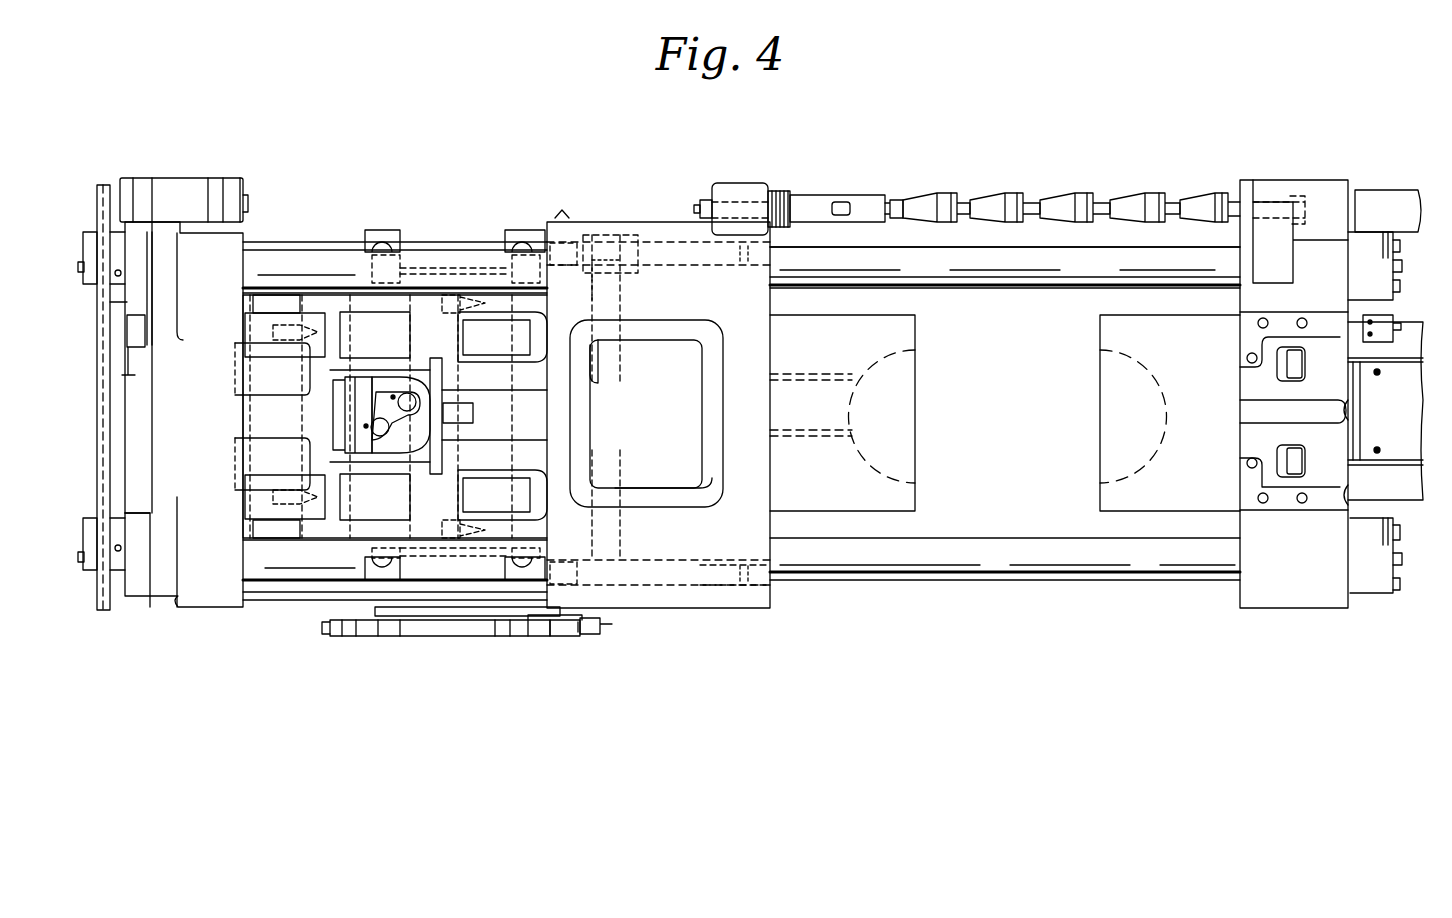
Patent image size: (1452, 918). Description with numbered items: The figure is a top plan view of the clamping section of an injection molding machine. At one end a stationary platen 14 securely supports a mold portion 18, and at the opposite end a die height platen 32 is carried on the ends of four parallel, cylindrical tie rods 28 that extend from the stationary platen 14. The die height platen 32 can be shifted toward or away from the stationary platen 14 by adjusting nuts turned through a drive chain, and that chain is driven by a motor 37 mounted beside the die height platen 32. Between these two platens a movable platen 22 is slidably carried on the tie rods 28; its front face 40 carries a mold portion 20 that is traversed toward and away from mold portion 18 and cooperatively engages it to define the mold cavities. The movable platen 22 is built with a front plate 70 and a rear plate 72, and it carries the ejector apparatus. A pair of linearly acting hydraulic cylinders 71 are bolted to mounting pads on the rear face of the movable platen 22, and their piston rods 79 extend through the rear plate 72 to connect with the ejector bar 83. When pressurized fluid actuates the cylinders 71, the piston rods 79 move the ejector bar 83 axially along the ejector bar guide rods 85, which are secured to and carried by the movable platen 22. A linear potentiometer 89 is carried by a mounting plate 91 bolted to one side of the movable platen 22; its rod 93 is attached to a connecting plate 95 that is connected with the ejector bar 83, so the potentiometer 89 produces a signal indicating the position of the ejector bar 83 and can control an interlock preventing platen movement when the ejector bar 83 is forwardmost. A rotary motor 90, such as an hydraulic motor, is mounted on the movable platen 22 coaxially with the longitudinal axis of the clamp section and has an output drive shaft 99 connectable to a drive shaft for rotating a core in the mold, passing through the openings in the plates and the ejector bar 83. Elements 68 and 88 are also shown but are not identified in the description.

The stationary platen 14 is at (1312, 185).
The mold portion 18 is at (1105, 326).
The mold portion 20 is at (915, 326).
The movable platen 22 is at (645, 290).
The tie rods 28 is at (1038, 285).
The die height platen 32 is at (218, 255).
The motor 37 is at (188, 185).
The front face 40 is at (770, 482).
The roller rod 68 is at (1018, 195).
The front plate 70 is at (752, 352).
The hydraulic cylinders 71 is at (392, 235).
The rear plate 72 is at (568, 290).
The piston rods 79 is at (588, 235).
The ejector bar 83 is at (612, 405).
The ejector bar guide rods 85 is at (672, 240).
The link 88 is at (448, 373).
The linear potentiometer 89 is at (415, 630).
The rotary motor 90 is at (375, 380).
The mounting plate 91 is at (462, 606).
The rod 93 is at (538, 630).
The connecting plate 95 is at (596, 618).
The output drive shaft 99 is at (473, 412).